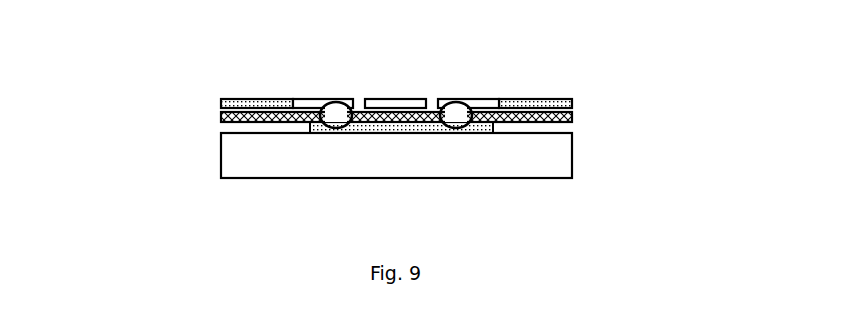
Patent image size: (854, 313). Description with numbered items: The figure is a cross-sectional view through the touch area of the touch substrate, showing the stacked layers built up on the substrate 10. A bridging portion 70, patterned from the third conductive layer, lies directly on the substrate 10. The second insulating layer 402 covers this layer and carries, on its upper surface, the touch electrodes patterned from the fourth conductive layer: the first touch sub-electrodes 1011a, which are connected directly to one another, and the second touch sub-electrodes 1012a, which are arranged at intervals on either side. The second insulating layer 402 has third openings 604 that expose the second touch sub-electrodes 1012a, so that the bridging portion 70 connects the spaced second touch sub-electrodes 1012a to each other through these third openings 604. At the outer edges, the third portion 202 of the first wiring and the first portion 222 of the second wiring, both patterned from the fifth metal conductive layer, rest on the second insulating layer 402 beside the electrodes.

The substrate 10 is at (210, 157).
The bridging portion 70 is at (407, 133).
The second insulating layer 402 is at (210, 117).
The third portion of the first wiring 202 is at (210, 100).
The first portion of the second wiring 222 is at (586, 97).
The second touch sub-electrodes 1012a is at (327, 99).
The first touch sub-electrodes 1011a is at (396, 99).
The third opening 604 is at (335, 128).